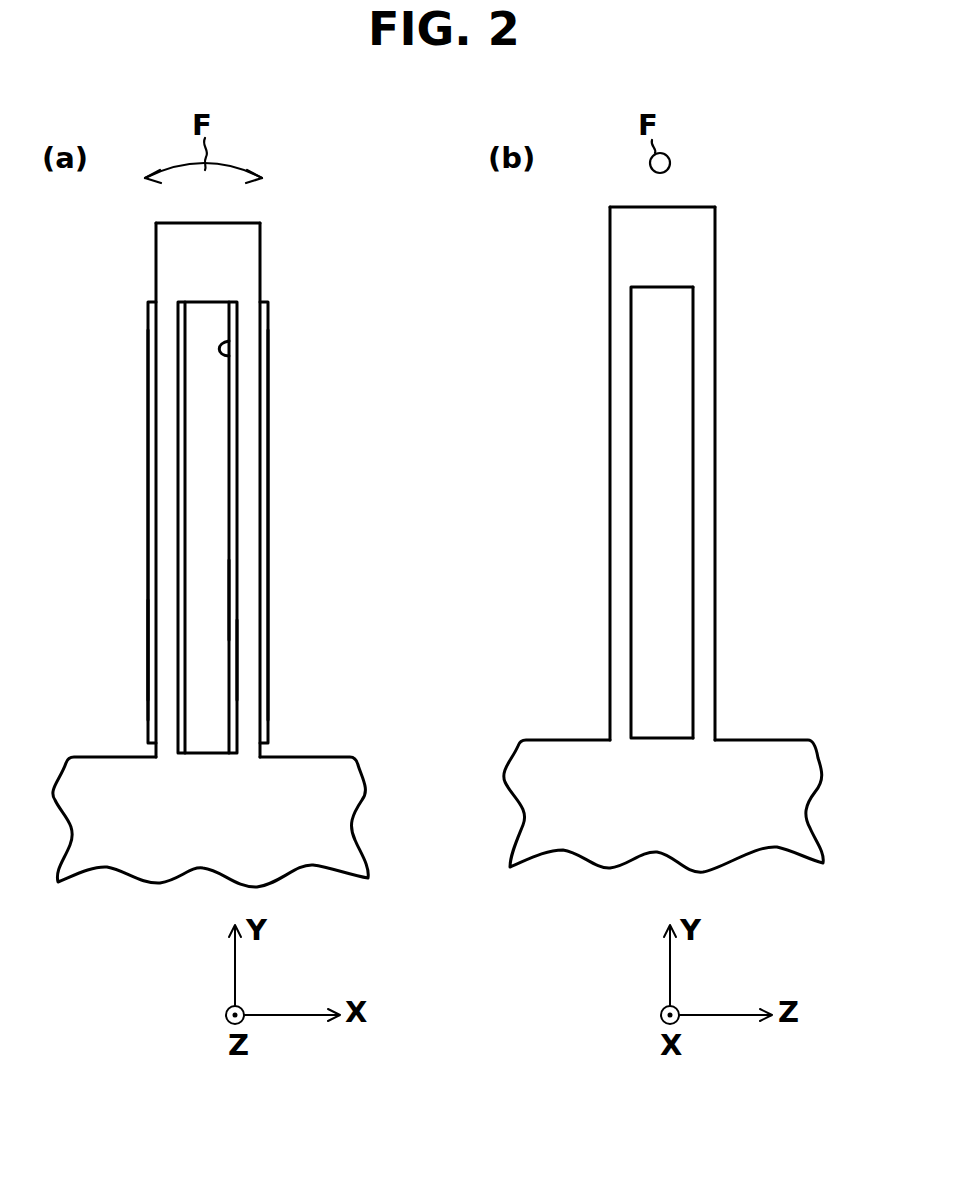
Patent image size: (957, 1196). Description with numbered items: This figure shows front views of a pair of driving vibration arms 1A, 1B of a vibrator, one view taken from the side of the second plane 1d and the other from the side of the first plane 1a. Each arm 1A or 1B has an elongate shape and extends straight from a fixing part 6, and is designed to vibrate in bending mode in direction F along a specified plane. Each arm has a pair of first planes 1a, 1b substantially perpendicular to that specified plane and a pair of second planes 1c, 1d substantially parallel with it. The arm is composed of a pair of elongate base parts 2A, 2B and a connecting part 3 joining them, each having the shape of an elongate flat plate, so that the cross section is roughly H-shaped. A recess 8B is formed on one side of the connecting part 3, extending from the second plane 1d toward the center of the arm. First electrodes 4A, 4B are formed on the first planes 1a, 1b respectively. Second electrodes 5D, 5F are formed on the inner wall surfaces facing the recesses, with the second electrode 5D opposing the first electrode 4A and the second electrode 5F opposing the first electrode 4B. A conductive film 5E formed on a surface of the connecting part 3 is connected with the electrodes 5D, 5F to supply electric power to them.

The driving vibration arm 1A is at (444, 444).
The driving vibration arm 1B is at (444, 444).
The first plane 1a is at (156, 268).
The first plane 1b is at (260, 290).
The second plane 1c is at (608, 275).
The second plane 1d is at (235, 250).
The base part 2A is at (167, 449).
The base part 2B is at (250, 412).
The connecting part 3 is at (220, 462).
The first electrode 4A is at (150, 525).
The first electrode 4B is at (263, 508).
The second electrode 5D is at (157, 630).
The conductive film 5E is at (223, 600).
The second electrode 5F is at (233, 658).
The fixing part 6 is at (315, 768).
The recess 8B is at (230, 357).